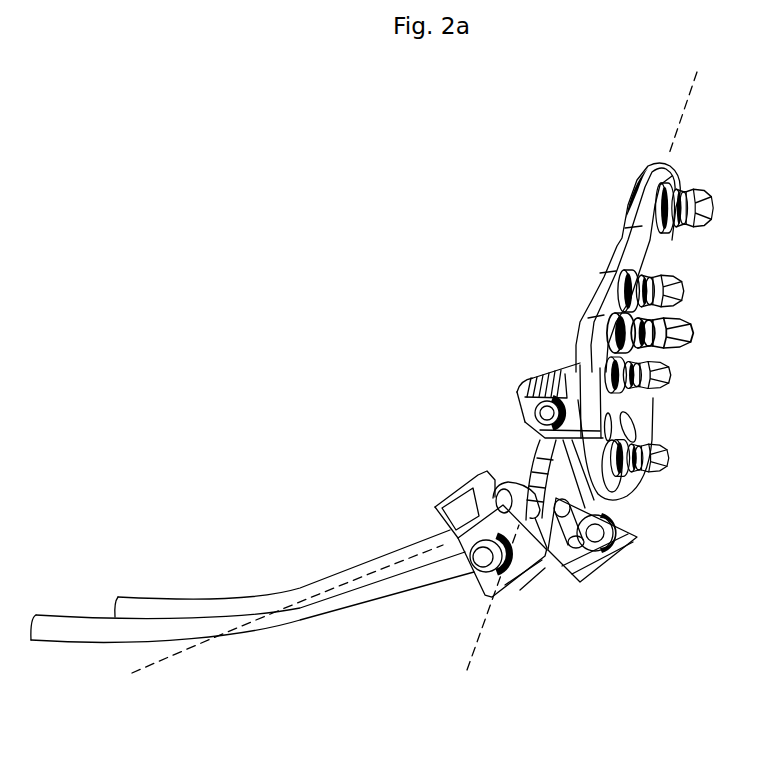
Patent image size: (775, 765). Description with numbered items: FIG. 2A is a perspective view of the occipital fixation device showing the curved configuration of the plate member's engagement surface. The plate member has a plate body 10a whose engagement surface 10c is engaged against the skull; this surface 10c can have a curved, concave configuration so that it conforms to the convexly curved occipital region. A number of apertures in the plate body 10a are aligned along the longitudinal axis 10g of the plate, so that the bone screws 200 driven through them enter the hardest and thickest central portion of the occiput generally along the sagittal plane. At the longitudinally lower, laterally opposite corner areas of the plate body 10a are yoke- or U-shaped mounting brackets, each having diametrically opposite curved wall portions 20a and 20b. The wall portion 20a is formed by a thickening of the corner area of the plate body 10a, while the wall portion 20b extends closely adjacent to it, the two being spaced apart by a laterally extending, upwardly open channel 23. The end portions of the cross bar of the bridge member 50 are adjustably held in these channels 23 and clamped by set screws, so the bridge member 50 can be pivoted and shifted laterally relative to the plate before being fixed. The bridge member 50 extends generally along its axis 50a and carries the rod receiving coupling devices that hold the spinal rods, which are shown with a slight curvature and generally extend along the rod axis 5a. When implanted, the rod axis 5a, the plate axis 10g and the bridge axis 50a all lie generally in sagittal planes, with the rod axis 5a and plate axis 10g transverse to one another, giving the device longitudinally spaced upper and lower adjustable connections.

The plate body 10a is at (650, 182).
The longitudinal axis 10g is at (683, 123).
The engagement surface 10c is at (645, 413).
The bone screw 200 is at (687, 200).
The curved wall portion 20a is at (580, 387).
The curved wall portion 20b is at (517, 398).
The channel 23 is at (539, 385).
The bridge member 50 is at (538, 462).
The axis of the bridge member 50a is at (463, 659).
The longitudinal axis 5a is at (172, 663).